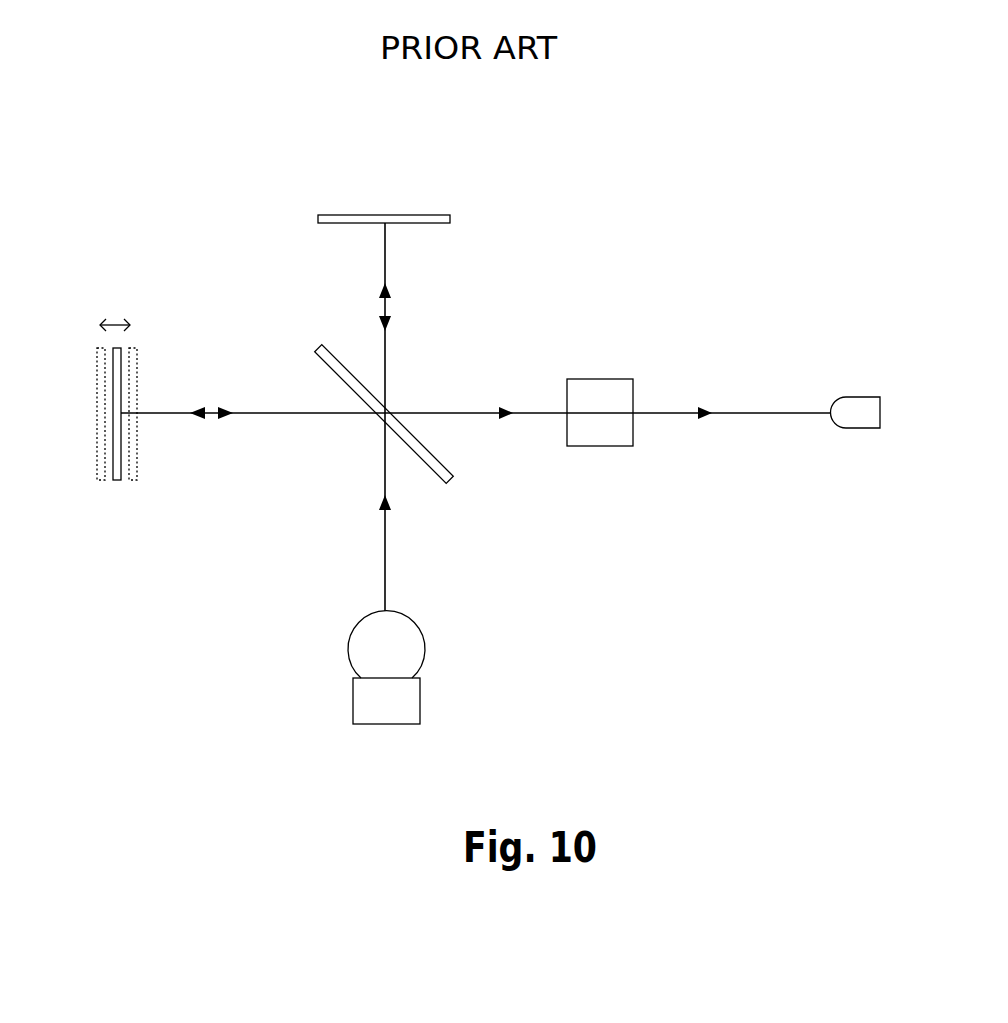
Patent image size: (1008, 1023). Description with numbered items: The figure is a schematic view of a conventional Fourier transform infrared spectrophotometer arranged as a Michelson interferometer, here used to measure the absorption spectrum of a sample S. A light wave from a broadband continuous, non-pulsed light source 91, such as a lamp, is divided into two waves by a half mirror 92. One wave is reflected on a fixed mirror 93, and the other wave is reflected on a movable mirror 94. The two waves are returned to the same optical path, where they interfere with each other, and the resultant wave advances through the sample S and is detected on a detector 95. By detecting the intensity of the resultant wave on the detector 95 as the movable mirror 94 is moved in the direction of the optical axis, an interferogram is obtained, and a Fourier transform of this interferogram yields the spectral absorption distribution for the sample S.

The light source 91 is at (423, 639).
The half mirror 92 is at (337, 357).
The fixed mirror 93 is at (432, 215).
The movable mirror 94 is at (113, 377).
The detector 95 is at (862, 397).
The sample S is at (597, 379).